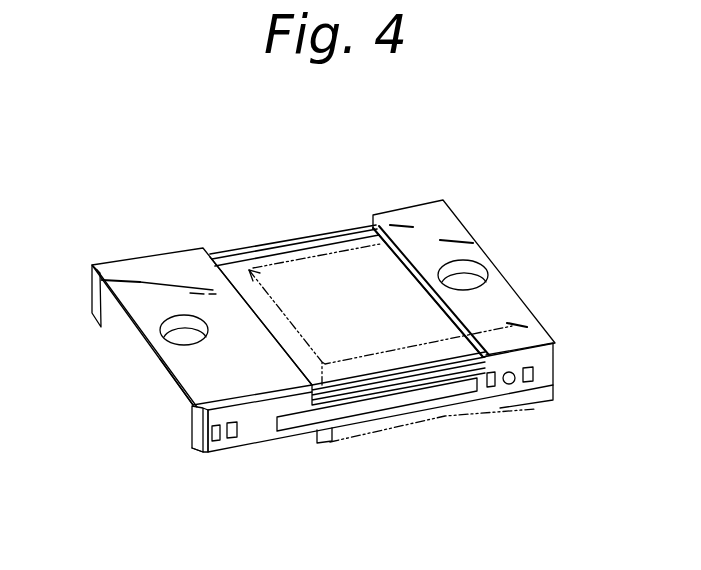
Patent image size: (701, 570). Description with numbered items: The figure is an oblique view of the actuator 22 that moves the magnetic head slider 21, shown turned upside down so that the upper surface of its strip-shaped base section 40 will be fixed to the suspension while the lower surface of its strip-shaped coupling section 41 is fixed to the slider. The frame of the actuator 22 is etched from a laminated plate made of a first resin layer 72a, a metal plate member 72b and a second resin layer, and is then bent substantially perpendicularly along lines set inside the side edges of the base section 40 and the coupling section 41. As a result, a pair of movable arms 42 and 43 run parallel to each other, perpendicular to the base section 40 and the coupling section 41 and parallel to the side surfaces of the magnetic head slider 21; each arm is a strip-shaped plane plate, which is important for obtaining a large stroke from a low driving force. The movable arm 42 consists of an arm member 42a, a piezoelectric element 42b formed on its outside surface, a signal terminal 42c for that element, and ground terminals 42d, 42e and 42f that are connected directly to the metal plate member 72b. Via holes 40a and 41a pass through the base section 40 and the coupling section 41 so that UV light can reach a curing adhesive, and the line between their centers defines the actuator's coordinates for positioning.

The magnetic head slider 21 is at (330, 256).
The actuator 22 is at (412, 181).
The base section 40 is at (137, 330).
The via hole 40a is at (160, 342).
The coupling section 41 is at (513, 308).
The via hole 41a is at (470, 278).
The movable arm 42 is at (412, 372).
The arm member 42a is at (483, 393).
The piezoelectric element 42b is at (372, 408).
The signal terminal 42c is at (237, 438).
The ground terminal 42d is at (493, 383).
The ground terminal 42e is at (213, 443).
The ground terminal 42f is at (532, 380).
The movable arm 43 is at (235, 255).
The first resin layer 72a is at (178, 382).
The metal plate member 72b is at (193, 428).